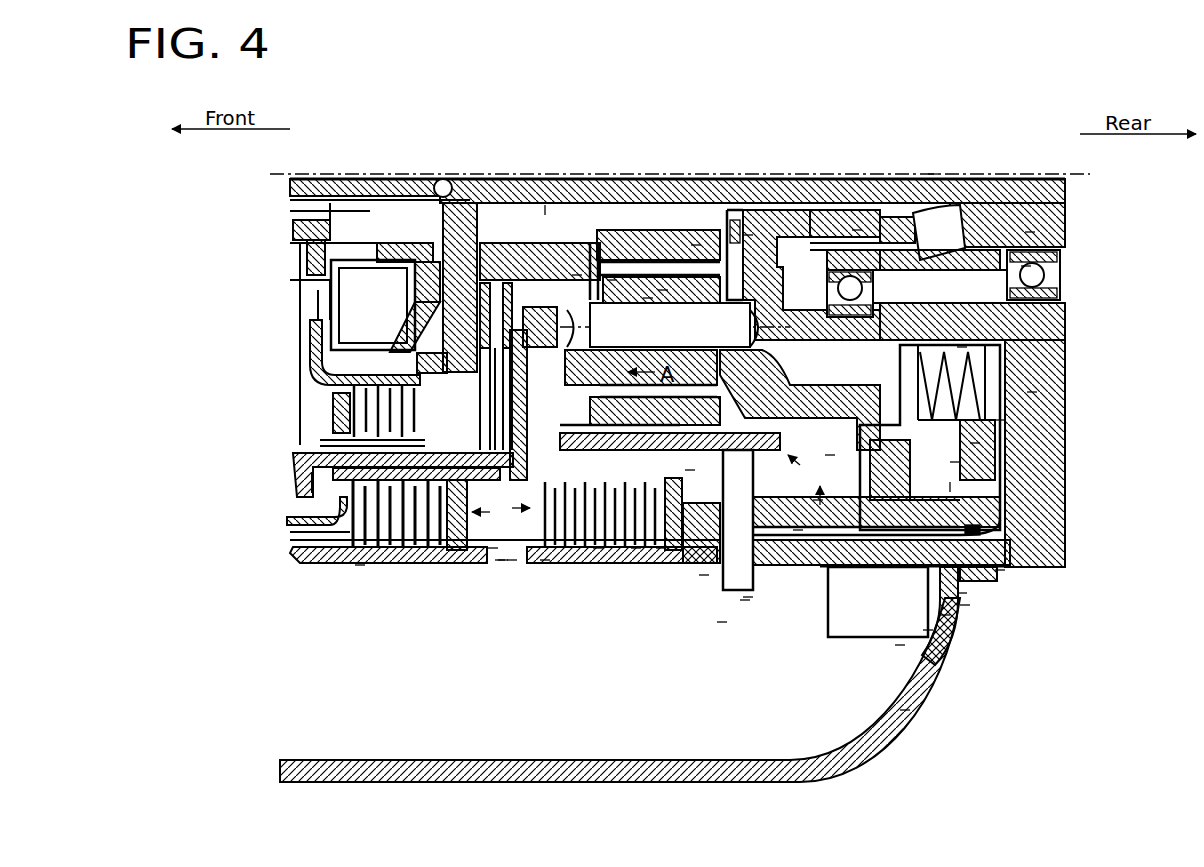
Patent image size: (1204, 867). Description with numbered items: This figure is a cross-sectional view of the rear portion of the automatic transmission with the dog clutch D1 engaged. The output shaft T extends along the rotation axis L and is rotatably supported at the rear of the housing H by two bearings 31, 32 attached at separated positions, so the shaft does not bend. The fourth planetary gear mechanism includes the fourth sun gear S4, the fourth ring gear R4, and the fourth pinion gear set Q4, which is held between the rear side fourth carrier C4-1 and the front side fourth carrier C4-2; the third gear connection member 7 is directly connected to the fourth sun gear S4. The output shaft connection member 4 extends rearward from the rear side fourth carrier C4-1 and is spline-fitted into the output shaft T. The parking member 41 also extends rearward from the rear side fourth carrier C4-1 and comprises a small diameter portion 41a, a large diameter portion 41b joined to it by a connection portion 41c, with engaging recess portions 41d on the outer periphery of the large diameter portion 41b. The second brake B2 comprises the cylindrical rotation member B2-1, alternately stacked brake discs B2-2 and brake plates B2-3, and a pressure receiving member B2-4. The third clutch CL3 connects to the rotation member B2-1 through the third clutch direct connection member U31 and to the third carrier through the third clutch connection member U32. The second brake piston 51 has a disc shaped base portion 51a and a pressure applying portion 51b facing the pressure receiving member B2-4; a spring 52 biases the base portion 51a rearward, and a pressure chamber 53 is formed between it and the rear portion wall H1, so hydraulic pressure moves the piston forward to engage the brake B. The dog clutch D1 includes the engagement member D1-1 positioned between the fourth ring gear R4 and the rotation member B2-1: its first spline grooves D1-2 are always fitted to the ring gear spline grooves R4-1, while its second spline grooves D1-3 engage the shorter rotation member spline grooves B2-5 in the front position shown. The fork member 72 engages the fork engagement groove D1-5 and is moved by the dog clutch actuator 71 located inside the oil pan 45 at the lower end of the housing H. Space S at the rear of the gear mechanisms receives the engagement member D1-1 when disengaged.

The front side fourth carrier C4-2 is at (555, 210).
The ring gear spline grooves R4-1 is at (577, 275).
The first spline grooves D1-2 is at (612, 280).
The fourth pinion gear set Q4 is at (648, 298).
The third gear connection member 7 is at (663, 290).
The fourth sun gear S4 is at (696, 245).
The rear side fourth carrier C4-1 is at (748, 235).
The bearing 31 is at (832, 270).
The output shaft connection member 4 is at (857, 230).
The rotation axis L is at (933, 176).
The bearing 32 is at (1026, 266).
The output shaft T is at (1030, 232).
The spring 52 is at (962, 347).
The rear portion wall H1 is at (1032, 392).
The pressure chamber 53 is at (1000, 420).
The base portion 51a is at (975, 443).
The connection portion 41c is at (955, 462).
The brake B is at (958, 487).
The large diameter portion 41b is at (1000, 570).
The housing H is at (962, 593).
The engaging recess portions 41d is at (965, 605).
The parking member 41 is at (945, 615).
The second brake piston 51 is at (928, 630).
The oil pan 45 is at (905, 710).
The dog clutch actuator 71 is at (900, 650).
The small diameter portion 41a is at (830, 455).
The space S is at (818, 500).
The engagement member D1-1 is at (798, 530).
The fork engagement groove D1-5 is at (770, 565).
The pressure applying portion 51b is at (745, 600).
The fork member 72 is at (748, 597).
The dog clutch D1 is at (722, 627).
The pressure receiving member B2-4 is at (704, 575).
The fourth ring gear R4 is at (690, 470).
The brake plates B2-3 is at (661, 548).
The brake discs B2-2 is at (636, 548).
The rotation member B2-1 is at (598, 548).
The second brake B2 is at (545, 560).
The second spline grooves D1-3 is at (512, 560).
The third clutch direct connection member U31 is at (500, 560).
The third clutch CL3 is at (493, 548).
The rotation member spline grooves B2-5 is at (503, 560).
The third clutch connection member U32 is at (360, 565).